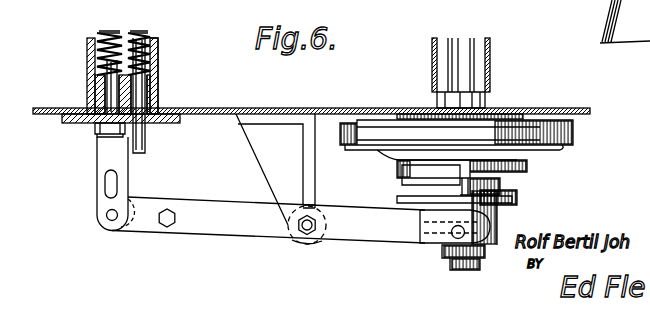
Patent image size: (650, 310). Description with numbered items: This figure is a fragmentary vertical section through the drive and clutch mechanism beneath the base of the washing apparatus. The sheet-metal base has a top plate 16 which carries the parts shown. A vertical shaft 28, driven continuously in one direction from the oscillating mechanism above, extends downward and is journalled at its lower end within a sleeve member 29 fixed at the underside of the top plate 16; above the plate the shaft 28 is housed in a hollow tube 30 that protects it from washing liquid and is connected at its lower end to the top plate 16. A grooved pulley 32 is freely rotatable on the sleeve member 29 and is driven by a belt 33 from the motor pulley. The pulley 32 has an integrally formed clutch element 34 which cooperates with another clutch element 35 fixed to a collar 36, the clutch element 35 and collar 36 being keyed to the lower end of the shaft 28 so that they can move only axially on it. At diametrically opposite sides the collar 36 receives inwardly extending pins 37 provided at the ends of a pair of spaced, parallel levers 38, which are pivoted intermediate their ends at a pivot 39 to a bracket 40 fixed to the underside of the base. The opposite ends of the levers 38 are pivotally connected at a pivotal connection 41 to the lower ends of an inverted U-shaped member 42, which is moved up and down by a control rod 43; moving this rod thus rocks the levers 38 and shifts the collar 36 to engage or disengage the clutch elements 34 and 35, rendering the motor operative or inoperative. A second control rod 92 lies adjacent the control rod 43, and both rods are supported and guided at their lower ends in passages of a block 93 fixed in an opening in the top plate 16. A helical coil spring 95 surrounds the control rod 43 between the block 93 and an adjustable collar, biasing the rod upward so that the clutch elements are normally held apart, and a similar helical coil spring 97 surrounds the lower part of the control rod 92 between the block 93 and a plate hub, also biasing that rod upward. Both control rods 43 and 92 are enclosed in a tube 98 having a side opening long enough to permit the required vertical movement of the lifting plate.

The top plate 16 is at (323, 108).
The shaft 28 is at (468, 33).
The sleeve member 29 is at (540, 107).
The hollow tube 30 is at (432, 50).
The grooved pulley 32 is at (563, 147).
The belt 33 is at (573, 128).
The clutch element 34 is at (397, 173).
The clutch element 35 is at (398, 198).
The collar 36 is at (493, 225).
The pins 37 is at (455, 237).
The levers 38 is at (377, 228).
The pivot 39 is at (302, 240).
The bracket 40 is at (265, 153).
The pivotal connection 41 is at (107, 215).
The inverted U-shaped member 42 is at (97, 152).
The control rod 43 is at (87, 85).
The control rod 92 is at (146, 143).
The block 93 is at (87, 93).
The helical coil spring 95 is at (103, 53).
The helical coil spring 97 is at (158, 43).
The tube 98 is at (158, 65).